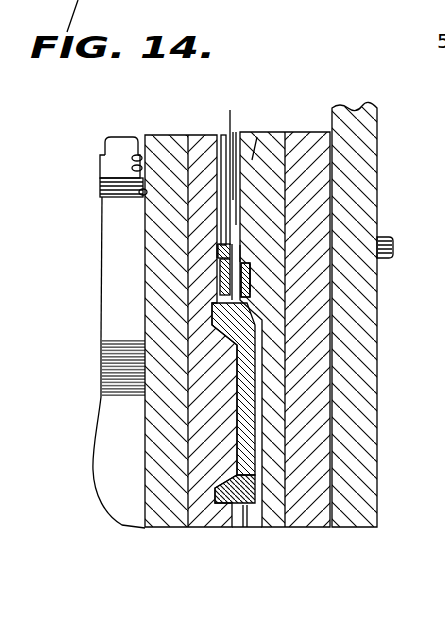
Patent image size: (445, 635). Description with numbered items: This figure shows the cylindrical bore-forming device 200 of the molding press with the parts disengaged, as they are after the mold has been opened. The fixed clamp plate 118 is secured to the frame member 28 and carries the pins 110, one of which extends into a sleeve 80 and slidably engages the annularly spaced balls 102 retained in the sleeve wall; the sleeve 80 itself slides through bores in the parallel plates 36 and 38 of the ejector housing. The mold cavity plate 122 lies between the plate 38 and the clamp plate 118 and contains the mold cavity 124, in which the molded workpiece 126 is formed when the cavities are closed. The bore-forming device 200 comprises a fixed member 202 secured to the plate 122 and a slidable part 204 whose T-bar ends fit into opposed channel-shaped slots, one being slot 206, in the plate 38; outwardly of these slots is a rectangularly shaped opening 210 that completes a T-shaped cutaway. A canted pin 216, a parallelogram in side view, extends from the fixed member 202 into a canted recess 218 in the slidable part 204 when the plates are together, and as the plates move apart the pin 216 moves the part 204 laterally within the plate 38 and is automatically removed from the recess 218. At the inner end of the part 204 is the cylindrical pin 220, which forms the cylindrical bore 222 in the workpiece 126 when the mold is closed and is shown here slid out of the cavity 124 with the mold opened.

The frame member 28 is at (365, 386).
The parallel plate 36 is at (155, 331).
The parallel plate 38 is at (205, 444).
The sleeve 80 is at (236, 140).
The ball 102 is at (106, 138).
The pin 110 is at (257, 137).
The clamp plate 118 is at (315, 510).
The mold cavity plate 122 is at (250, 514).
The mold cavity 124 is at (254, 394).
The molded workpiece 126 is at (255, 466).
The cylindrical bore-forming device 200 is at (245, 228).
The fixed member 202 is at (268, 287).
The slidable part 204 is at (210, 247).
The channel-shaped slot 206 is at (221, 135).
The rectangularly shaped opening 210 is at (230, 110).
The canted pin 216 is at (270, 270).
The canted recess 218 is at (220, 252).
The cylindrical pin 220 is at (222, 297).
The cylindrical bore 222 is at (252, 303).